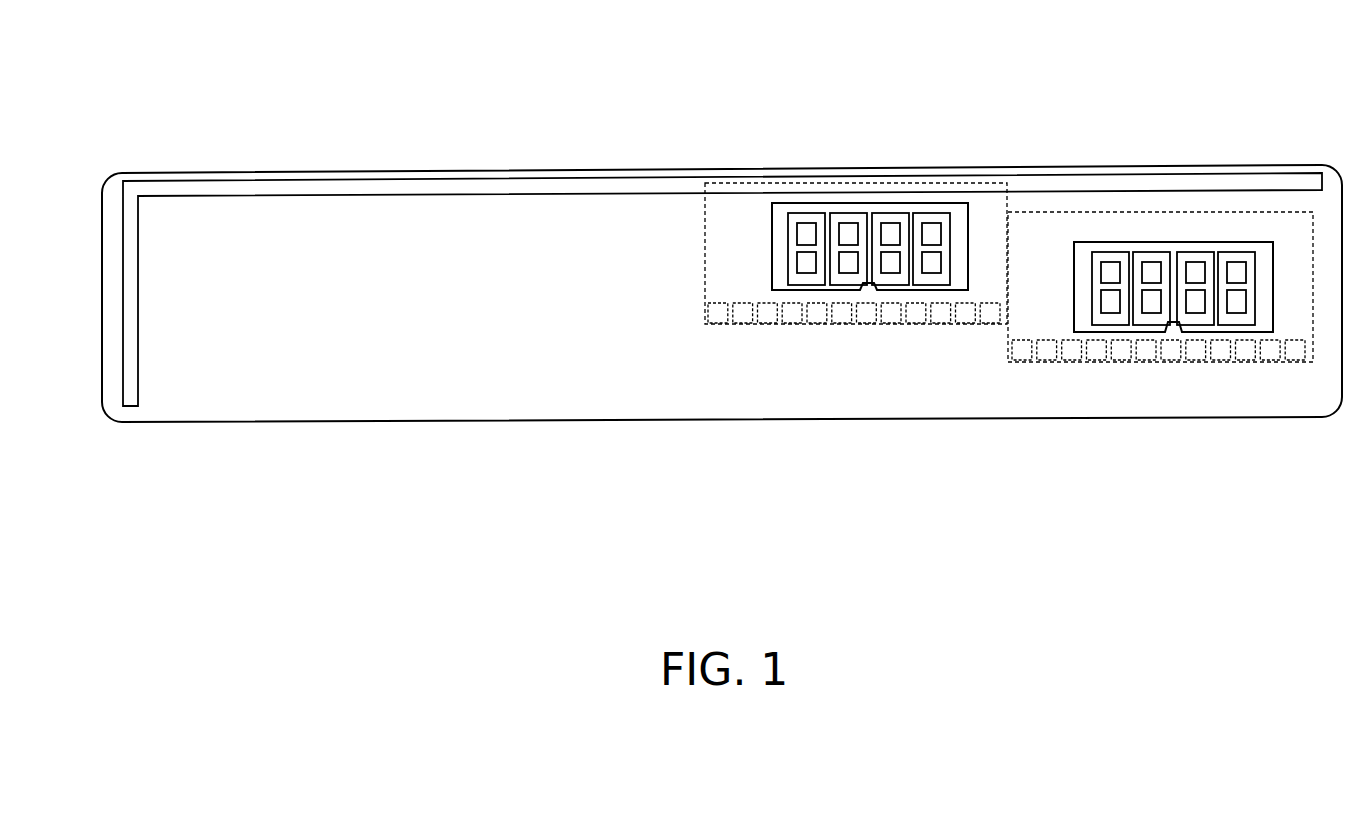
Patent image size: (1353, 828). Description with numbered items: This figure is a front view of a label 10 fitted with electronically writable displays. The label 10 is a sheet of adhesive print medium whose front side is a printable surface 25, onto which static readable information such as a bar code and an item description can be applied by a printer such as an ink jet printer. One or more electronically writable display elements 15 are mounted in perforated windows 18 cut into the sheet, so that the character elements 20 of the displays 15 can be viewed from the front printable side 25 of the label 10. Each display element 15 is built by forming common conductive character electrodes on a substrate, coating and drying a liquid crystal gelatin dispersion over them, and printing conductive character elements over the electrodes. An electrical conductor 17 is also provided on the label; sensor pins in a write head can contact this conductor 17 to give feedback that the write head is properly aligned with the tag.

The label 10 is at (305, 422).
The electronically writable display element 15 is at (1212, 212).
The electrical conductor 17 is at (488, 178).
The window 18 is at (1085, 243).
The character element 20 is at (1098, 318).
The printable surface 25 is at (512, 393).